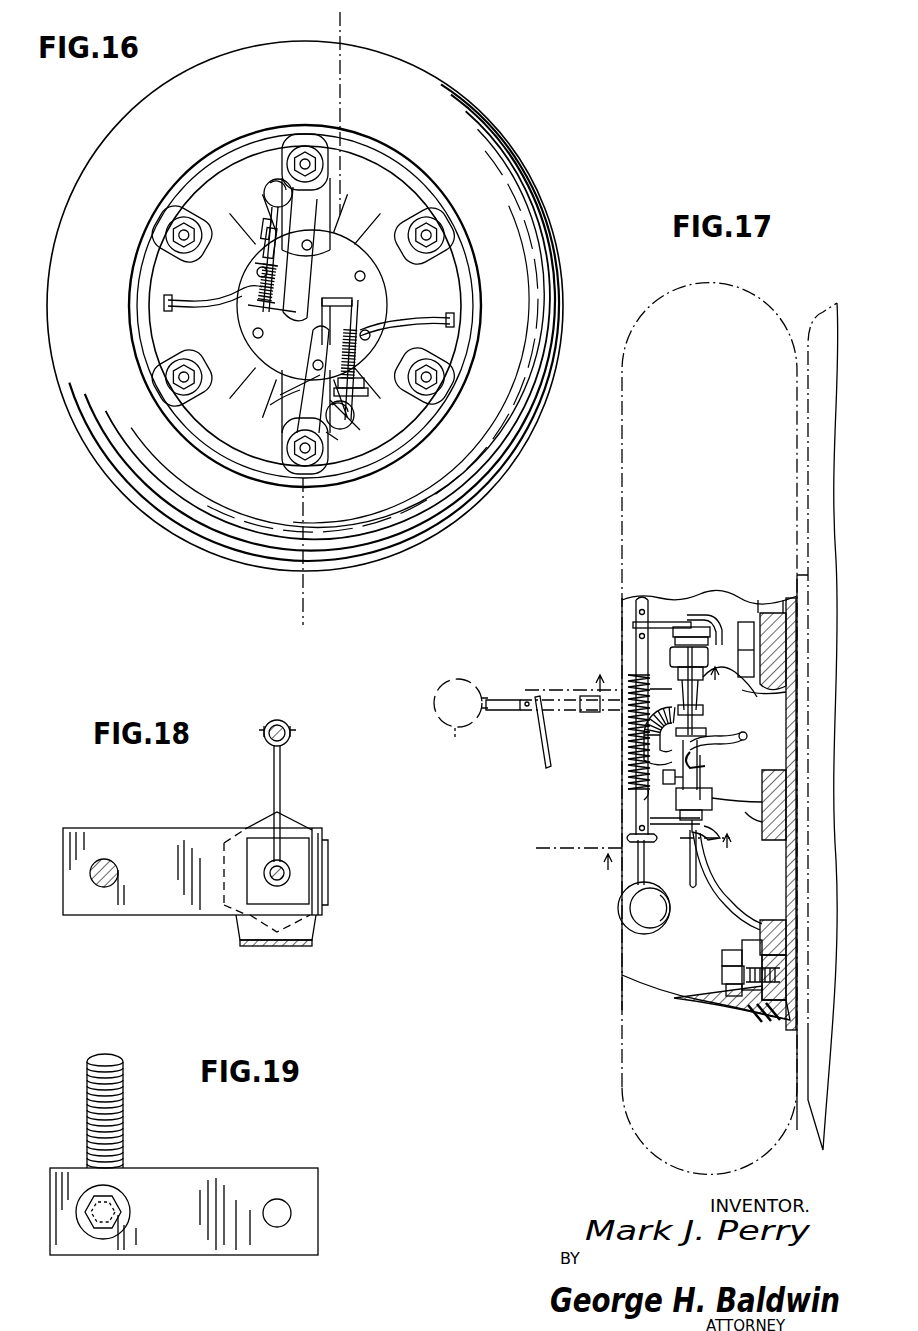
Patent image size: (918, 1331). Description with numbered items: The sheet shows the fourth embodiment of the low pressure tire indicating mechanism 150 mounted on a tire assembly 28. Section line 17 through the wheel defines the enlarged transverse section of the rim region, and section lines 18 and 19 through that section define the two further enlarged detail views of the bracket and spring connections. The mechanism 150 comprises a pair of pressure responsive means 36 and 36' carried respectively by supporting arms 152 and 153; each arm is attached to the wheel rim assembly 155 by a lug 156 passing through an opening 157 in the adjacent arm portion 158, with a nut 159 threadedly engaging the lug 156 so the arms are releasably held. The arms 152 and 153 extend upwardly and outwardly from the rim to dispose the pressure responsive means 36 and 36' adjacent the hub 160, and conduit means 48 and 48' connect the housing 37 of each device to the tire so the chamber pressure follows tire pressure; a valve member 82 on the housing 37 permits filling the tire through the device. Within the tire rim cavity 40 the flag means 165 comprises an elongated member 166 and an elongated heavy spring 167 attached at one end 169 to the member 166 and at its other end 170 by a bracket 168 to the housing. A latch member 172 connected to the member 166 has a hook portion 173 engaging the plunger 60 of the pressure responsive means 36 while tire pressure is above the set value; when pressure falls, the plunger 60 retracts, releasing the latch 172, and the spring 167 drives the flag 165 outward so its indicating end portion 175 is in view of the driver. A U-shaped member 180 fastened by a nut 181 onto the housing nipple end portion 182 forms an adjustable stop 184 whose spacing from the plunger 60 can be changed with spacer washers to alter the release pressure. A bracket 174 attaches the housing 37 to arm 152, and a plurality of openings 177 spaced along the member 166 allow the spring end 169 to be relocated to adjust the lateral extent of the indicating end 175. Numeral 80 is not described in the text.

In FIG. 16, the section line 17– 17 is at (352, 26).
In FIG. 17, the section line 18– 18 is at (641, 864).
In FIG. 17, the section line 19– 19 is at (636, 675).
In FIG. 16, the tire assembly 28 is at (444, 88).
In FIG. 17, the tire assembly 28 is at (765, 298).
In FIG. 17, the pressure responsive means 36 is at (712, 755).
In FIG. 16, the pressure responsive means 36' is at (254, 245).
In FIG. 17, the pressure responsive means 36' is at (720, 625).
In FIG. 17, the housing 37 is at (710, 777).
In FIG. 17, the tire rim cavity 40 is at (630, 958).
In FIG. 16, the conduit means 48 is at (407, 303).
In FIG. 17, the conduit means 48 is at (737, 735).
In FIG. 16, the conduit means 48' is at (213, 309).
In FIG. 17, the plunger 60 is at (711, 840).
In FIG. 18, the plunger 60 is at (286, 860).
In FIG. 17, the bracket bar 80 is at (630, 622).
In FIG. 17, the valve member 82 is at (665, 784).
In FIG. 17, the tire indicating mechanism 150 is at (603, 796).
In FIG. 16, the supporting arm 152 is at (292, 390).
In FIG. 17, the supporting arm 152 is at (716, 906).
In FIG. 18, the supporting arm 152 is at (90, 873).
In FIG. 19, the supporting arm 152 is at (292, 1211).
In FIG. 16, the supporting arm 153 is at (318, 208).
In FIG. 16, the wheel rim assembly 155 is at (322, 436).
In FIG. 17, the wheel rim assembly 155 is at (745, 920).
In FIG. 16, the lug 156 is at (282, 158).
In FIG. 17, the lug 156 is at (764, 1022).
In FIG. 17, the opening 157 is at (724, 974).
In FIG. 16, the arm portion 158 is at (292, 455).
In FIG. 17, the arm portion 158 is at (728, 994).
In FIG. 16, the nut 159 is at (300, 164).
In FIG. 17, the nut 159 is at (728, 955).
In FIG. 16, the hub 160 is at (283, 333).
In FIG. 17, the hub 160 is at (760, 693).
In FIG. 17, the flag means 165 is at (510, 700).
In FIG. 18, the flag means 165 is at (264, 733).
In FIG. 17, the elongated member 166 is at (636, 830).
In FIG. 16, the spring 167 is at (385, 318).
In FIG. 17, the spring 167 is at (630, 738).
In FIG. 19, the spring 167 is at (124, 1094).
In FIG. 16, the bracket 168 is at (340, 312).
In FIG. 17, the bracket 168 is at (700, 730).
In FIG. 19, the bracket 168 is at (182, 1257).
In FIG. 17, the spring end 169 is at (640, 790).
In FIG. 17, the spring end 170 is at (748, 690).
In FIG. 19, the spring end 170 is at (104, 1186).
In FIG. 17, the latch member 172 is at (646, 858).
In FIG. 18, the latch member 172 is at (284, 770).
In FIG. 18, the hook portion 173 is at (292, 872).
In FIG. 18, the bracket 174 is at (176, 830).
In FIG. 16, the indicating end portion 175 is at (342, 403).
In FIG. 17, the indicating end portion 175 is at (632, 920).
In FIG. 17, the openings 177 is at (676, 824).
In FIG. 17, the U-shaped member 180 is at (692, 888).
In FIG. 17, the nut 181 is at (770, 822).
In FIG. 17, the housing nipple end portion 182 is at (760, 803).
In FIG. 17, the stop 184 is at (679, 861).